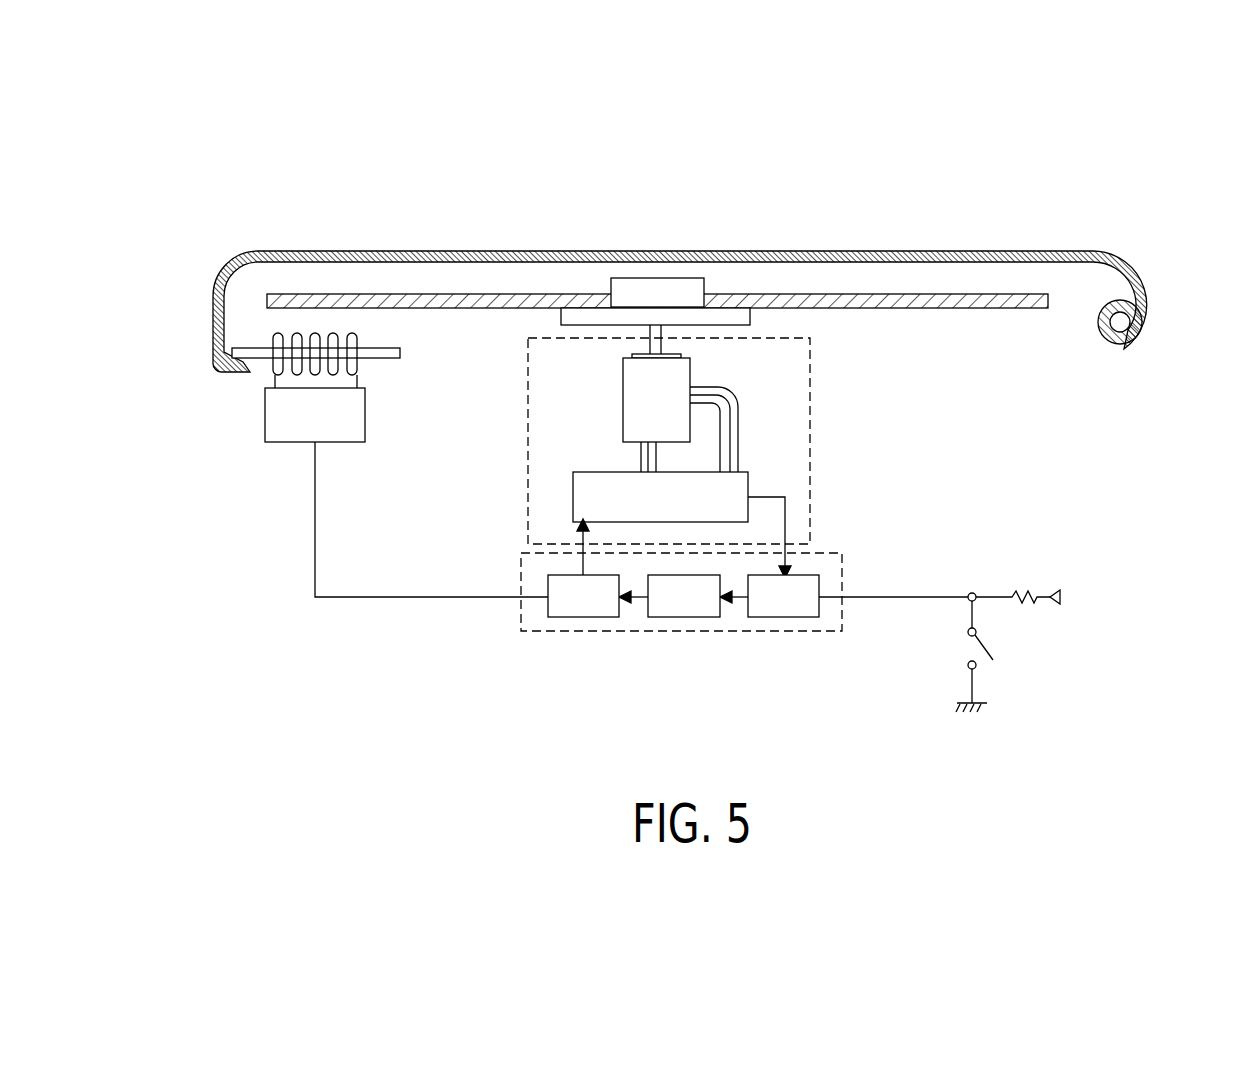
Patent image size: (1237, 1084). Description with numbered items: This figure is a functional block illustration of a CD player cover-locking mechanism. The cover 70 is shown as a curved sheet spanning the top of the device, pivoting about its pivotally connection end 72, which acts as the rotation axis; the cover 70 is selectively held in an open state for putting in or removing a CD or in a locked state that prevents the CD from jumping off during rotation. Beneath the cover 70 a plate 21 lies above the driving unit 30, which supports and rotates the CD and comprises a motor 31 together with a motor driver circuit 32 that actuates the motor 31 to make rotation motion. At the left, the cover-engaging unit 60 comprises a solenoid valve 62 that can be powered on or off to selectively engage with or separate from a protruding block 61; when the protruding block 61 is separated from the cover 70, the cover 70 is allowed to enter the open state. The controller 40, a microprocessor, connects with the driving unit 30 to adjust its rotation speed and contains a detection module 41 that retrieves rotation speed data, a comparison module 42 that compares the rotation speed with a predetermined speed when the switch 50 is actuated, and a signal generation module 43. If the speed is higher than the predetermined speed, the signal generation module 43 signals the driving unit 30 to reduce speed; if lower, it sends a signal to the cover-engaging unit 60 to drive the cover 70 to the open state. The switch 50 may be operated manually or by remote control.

The cover 70 is at (692, 242).
The hatched plate 21 is at (860, 300).
The pivotally connection end 72 is at (1120, 325).
The driving unit 30 is at (795, 428).
The motor 31 is at (638, 405).
The motor driver circuit 32 is at (578, 478).
The controller 40 is at (836, 571).
The detection module 41 is at (787, 612).
The comparison module 42 is at (672, 612).
The signal generation module 43 is at (575, 612).
The switch 50 is at (988, 647).
The cover-engaging unit 60 is at (286, 445).
The protruding block 61 is at (260, 356).
The solenoid valve 62 is at (290, 432).